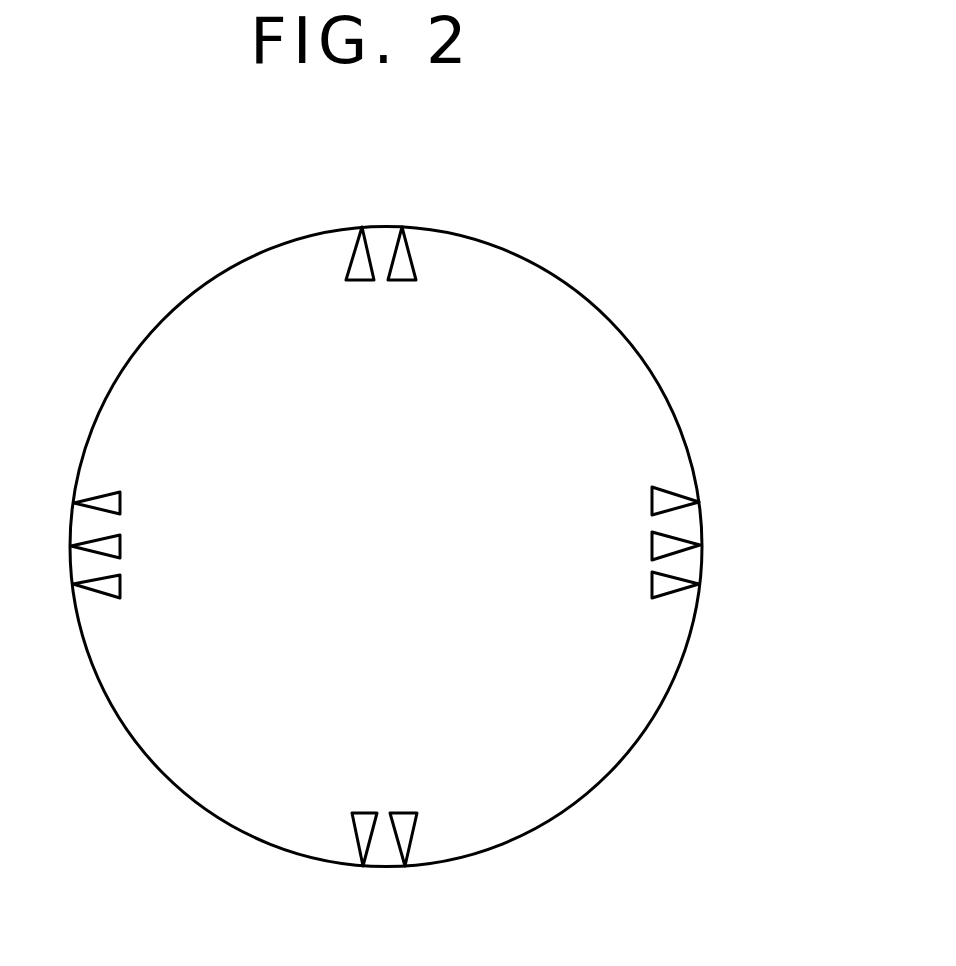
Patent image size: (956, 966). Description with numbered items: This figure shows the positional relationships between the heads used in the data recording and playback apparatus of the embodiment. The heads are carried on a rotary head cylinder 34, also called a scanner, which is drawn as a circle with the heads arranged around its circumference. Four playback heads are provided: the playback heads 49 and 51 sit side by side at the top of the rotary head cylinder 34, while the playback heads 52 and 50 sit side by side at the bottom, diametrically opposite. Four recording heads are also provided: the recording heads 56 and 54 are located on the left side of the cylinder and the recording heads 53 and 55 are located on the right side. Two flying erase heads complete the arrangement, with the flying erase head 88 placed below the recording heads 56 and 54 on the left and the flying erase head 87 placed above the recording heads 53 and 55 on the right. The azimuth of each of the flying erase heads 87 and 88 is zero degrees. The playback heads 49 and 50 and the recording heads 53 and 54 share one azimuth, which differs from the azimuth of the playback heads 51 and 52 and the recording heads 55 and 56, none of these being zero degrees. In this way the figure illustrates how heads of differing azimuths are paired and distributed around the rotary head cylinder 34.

The rotary head cylinder 34 is at (138, 340).
The playback head 49 is at (357, 228).
The playback head 51 is at (392, 233).
The playback head 52 is at (362, 862).
The playback head 50 is at (400, 862).
The recording head 56 is at (120, 500).
The recording head 54 is at (120, 548).
The flying erase head 88 is at (120, 590).
The flying erase head 87 is at (694, 488).
The recording head 53 is at (700, 528).
The recording head 55 is at (703, 568).